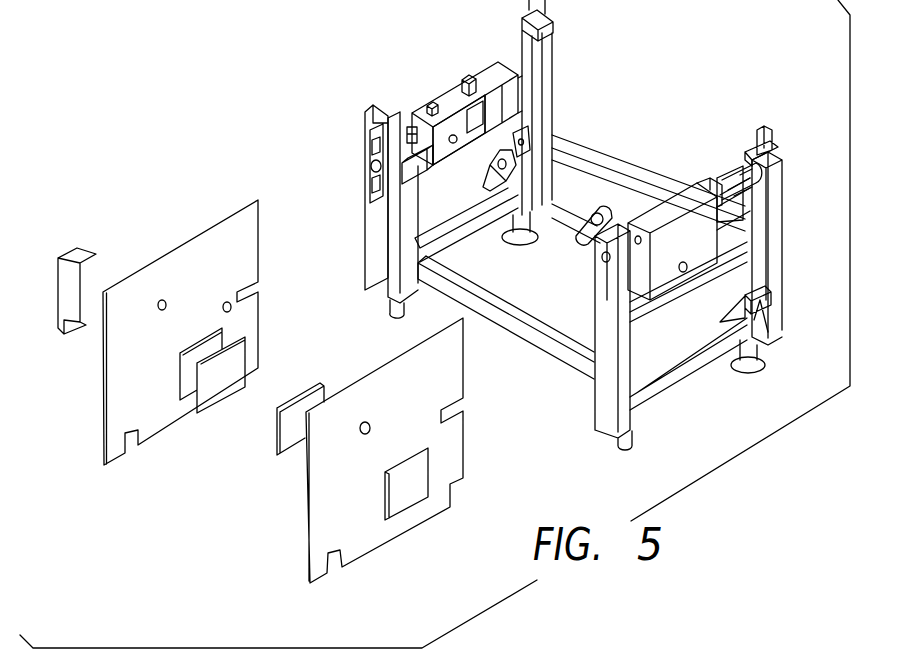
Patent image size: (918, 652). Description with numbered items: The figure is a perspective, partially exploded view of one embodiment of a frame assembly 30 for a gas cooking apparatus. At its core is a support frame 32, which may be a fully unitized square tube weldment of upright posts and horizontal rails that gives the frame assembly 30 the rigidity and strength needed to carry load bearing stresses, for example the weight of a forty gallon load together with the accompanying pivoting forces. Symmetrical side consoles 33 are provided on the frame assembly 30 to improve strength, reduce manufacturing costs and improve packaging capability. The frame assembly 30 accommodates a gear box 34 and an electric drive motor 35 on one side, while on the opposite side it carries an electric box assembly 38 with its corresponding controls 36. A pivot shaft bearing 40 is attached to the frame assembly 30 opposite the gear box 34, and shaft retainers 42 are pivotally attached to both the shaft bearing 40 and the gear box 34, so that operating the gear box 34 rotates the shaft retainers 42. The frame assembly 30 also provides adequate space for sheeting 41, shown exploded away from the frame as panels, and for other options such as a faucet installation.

The frame assembly 30 is at (245, 99).
The support frame 32 is at (772, 302).
The side consoles 33 is at (377, 222).
The gear box 34 is at (700, 240).
The electric drive motor 35 is at (770, 152).
The controls 36 is at (373, 135).
The electric box assembly 38 is at (493, 72).
The shaft bearing 40 is at (455, 142).
The sheeting 41 is at (208, 252).
The shaft retainers 42 is at (607, 208).